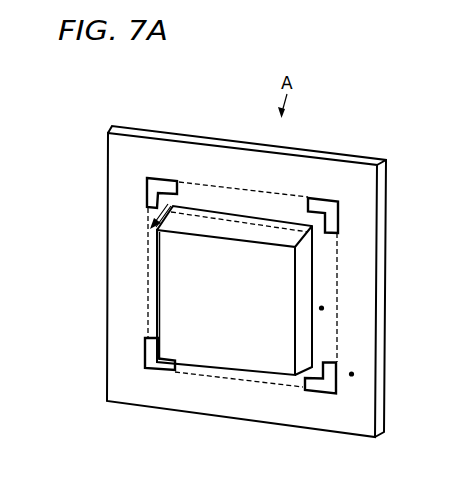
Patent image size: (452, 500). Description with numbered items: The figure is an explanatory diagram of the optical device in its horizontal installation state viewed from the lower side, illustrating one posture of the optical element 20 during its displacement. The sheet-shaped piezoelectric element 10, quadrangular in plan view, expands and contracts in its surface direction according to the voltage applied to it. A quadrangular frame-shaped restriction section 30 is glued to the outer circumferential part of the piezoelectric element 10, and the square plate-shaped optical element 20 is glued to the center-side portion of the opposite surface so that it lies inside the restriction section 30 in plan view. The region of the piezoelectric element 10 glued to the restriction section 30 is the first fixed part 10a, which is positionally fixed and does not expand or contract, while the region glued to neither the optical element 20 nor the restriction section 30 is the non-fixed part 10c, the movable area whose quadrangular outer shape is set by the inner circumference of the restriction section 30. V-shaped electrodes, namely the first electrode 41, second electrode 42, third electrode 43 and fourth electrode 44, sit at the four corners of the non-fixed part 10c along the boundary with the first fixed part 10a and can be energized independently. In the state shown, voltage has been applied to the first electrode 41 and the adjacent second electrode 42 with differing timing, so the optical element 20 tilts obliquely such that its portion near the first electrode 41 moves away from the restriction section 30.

The piezoelectric element 10 is at (240, 403).
The first fixed part 10a is at (352, 374).
The non-fixed part 10c is at (322, 308).
The optical element 20 is at (172, 274).
The restriction section 30 is at (384, 213).
The first electrode 41 is at (162, 178).
The second electrode 42 is at (323, 198).
The third electrode 43 is at (315, 393).
The fourth electrode 44 is at (150, 370).